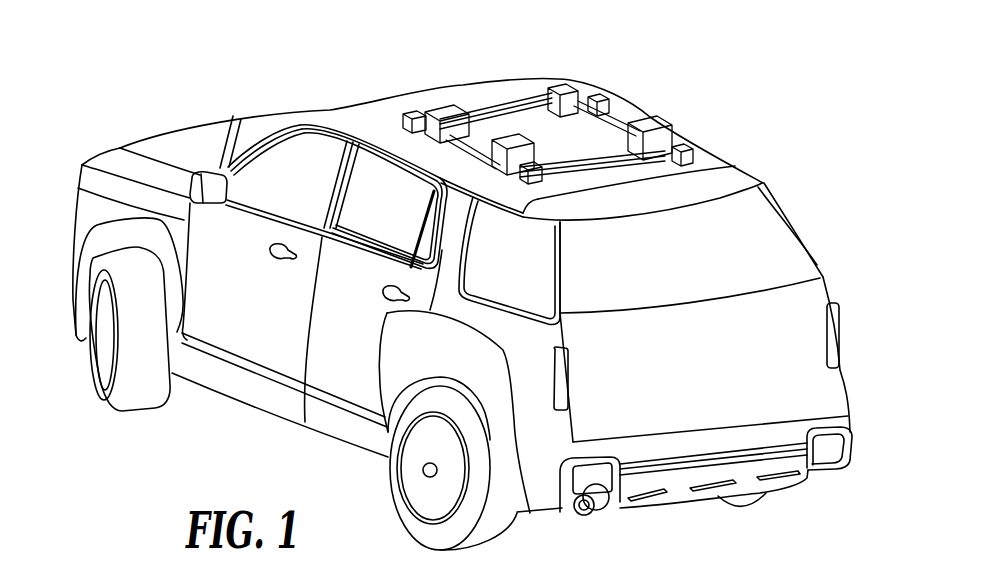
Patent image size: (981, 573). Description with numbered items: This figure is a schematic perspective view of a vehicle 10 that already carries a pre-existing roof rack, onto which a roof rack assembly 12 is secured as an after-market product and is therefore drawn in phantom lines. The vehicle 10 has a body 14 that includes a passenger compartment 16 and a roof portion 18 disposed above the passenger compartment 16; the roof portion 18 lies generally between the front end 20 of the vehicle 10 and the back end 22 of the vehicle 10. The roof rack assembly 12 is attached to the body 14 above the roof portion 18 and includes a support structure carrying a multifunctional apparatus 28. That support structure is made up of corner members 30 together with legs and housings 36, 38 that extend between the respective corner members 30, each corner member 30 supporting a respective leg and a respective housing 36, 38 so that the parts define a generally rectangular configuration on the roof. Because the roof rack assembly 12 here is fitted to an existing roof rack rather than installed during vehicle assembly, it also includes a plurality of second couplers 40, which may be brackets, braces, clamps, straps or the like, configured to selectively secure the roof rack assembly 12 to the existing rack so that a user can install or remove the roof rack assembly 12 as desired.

The vehicle 10 is at (158, 105).
The roof rack assembly 12 is at (560, 141).
The body 14 is at (817, 257).
The passenger compartment 16 is at (292, 163).
The roof portion 18 is at (443, 93).
The front end 20 is at (82, 165).
The back end 22 is at (647, 448).
The multifunctional apparatus 28 is at (605, 86).
The corner members 30 is at (433, 100).
The housing 36 is at (565, 145).
The housing 38 is at (507, 103).
The second couplers 40 is at (543, 92).